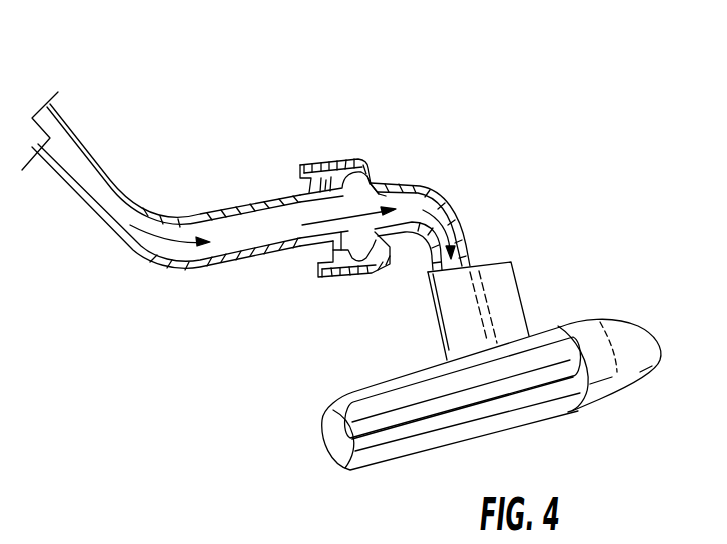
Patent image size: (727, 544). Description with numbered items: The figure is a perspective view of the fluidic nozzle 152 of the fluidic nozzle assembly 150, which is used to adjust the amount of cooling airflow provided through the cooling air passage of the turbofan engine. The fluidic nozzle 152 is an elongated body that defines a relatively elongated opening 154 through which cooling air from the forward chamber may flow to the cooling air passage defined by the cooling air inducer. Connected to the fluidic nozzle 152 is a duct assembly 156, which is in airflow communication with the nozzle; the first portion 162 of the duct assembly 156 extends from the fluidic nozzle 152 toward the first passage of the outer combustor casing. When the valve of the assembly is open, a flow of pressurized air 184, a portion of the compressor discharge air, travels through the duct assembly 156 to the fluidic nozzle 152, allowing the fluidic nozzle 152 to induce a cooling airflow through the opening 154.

The fluidic nozzle assembly 150 is at (305, 68).
The fluidic nozzle 152 is at (517, 292).
The opening 154 is at (418, 412).
The duct assembly 156 is at (157, 290).
The first portion 162 is at (110, 180).
The flow of pressurized air 184 is at (376, 194).